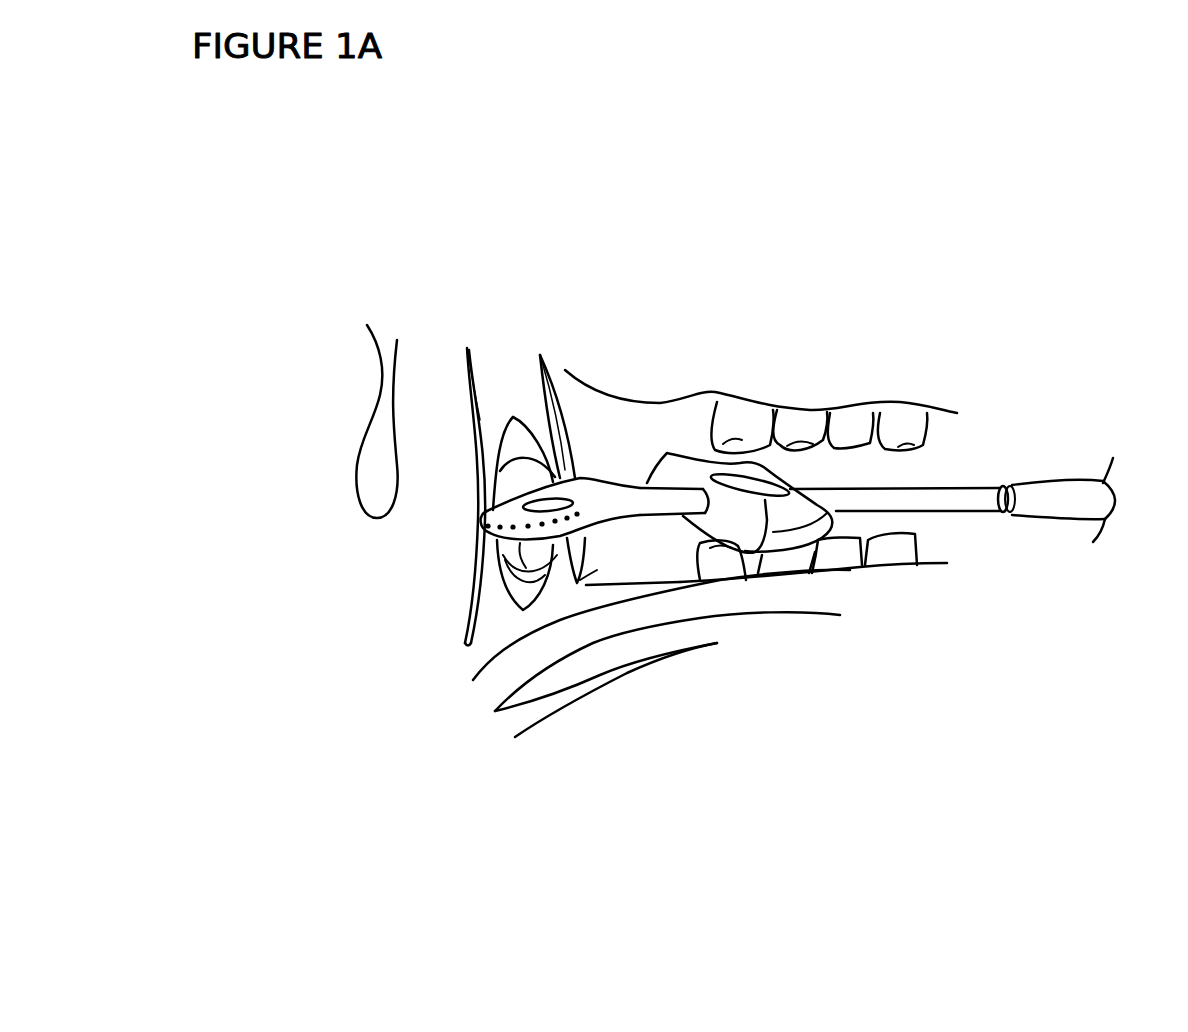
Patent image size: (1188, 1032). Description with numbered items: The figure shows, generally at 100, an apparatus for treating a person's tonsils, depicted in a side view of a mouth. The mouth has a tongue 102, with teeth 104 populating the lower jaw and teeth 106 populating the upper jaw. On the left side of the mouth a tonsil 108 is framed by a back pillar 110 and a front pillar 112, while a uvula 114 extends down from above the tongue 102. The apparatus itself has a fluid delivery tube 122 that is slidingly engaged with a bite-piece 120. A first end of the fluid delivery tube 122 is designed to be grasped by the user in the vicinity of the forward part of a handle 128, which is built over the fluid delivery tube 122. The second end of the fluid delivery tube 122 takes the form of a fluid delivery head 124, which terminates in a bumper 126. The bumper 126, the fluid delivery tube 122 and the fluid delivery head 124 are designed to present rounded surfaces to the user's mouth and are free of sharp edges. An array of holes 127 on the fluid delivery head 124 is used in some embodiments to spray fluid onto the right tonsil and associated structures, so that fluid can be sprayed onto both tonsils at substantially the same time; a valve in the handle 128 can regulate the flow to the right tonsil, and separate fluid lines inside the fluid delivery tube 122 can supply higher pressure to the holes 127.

The apparatus for treating a tonsil 100 is at (975, 147).
The tongue 102 is at (592, 668).
The teeth of the lower jaw 104 is at (845, 555).
The teeth of the upper jaw 106 is at (803, 425).
The tonsil 108 is at (515, 595).
The back pillar 110 is at (473, 360).
The front pillar 112 is at (545, 373).
The uvula 114 is at (372, 468).
The bite-piece 120 is at (753, 523).
The fluid delivery tube 122 is at (940, 495).
The fluid delivery head 124 is at (590, 510).
The bumper 126 is at (480, 520).
The array of holes 127 is at (500, 585).
The handle 128 is at (1030, 505).